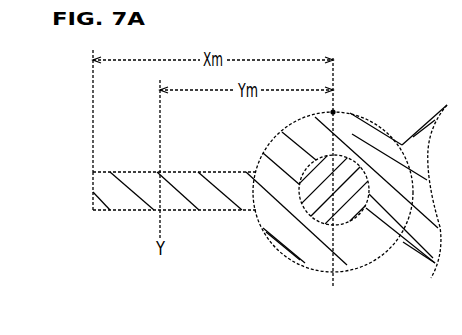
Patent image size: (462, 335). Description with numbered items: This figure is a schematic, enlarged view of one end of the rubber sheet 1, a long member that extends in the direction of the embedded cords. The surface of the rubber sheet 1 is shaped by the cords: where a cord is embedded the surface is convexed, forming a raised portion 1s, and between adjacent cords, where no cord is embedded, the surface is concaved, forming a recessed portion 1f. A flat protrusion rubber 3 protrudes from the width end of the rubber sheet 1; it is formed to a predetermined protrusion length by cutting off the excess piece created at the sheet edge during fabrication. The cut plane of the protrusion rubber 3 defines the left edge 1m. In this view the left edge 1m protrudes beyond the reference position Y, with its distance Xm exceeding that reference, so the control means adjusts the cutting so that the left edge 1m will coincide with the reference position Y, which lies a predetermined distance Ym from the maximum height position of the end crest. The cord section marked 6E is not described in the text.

The rubber sheet 1 is at (354, 137).
The raised portion 1s is at (334, 110).
The recessed portion 1f is at (401, 147).
The left edge 1m is at (93, 191).
The protrusion rubber 3 is at (212, 197).
The inner core 6E is at (342, 200).